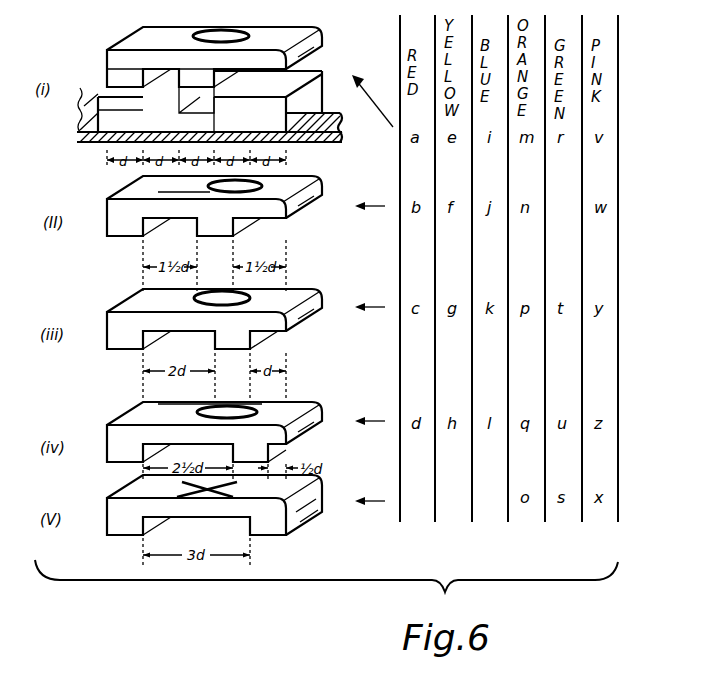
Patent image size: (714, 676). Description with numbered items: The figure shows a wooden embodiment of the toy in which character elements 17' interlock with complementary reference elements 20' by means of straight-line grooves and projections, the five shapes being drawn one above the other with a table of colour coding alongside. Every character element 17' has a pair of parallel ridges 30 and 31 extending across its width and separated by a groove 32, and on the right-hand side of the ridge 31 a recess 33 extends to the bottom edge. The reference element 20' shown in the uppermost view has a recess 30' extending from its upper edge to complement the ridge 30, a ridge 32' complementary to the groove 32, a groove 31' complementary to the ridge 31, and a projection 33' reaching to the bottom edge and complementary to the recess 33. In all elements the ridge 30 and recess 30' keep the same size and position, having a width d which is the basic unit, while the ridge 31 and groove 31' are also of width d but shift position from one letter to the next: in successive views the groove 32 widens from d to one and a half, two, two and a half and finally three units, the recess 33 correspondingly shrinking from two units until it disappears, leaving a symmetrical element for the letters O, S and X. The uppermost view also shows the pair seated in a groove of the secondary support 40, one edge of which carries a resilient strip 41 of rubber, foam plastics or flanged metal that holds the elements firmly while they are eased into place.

The character element 17' is at (201, 279).
The ridge 30 is at (106, 67).
The ridge 31 is at (196, 70).
The groove 32 is at (144, 69).
The recess 33 is at (248, 80).
The reference element 20' is at (210, 112).
The recess 30' is at (120, 120).
The groove 31' is at (210, 101).
The ridge 32' is at (161, 91).
The projection 33' is at (245, 114).
The secondary support 40 is at (195, 123).
The resilient strip 41 is at (80, 128).